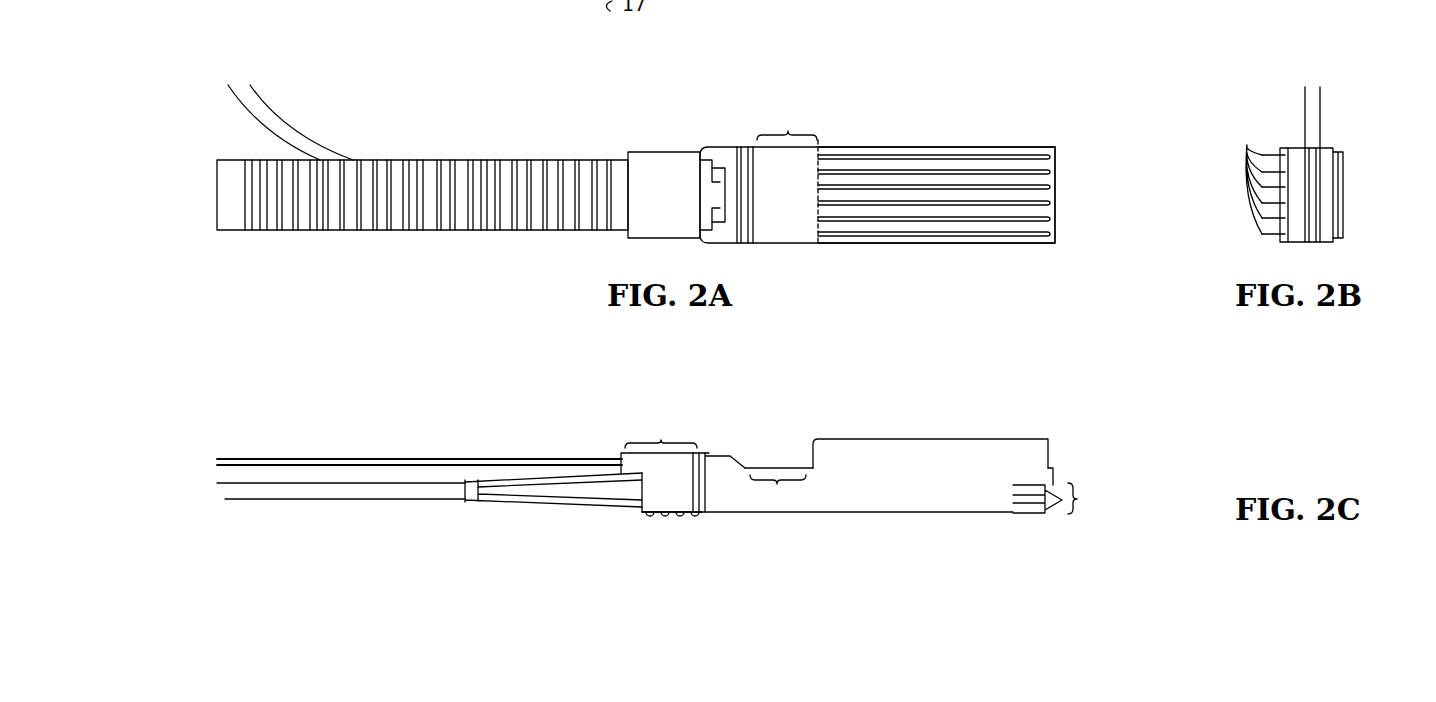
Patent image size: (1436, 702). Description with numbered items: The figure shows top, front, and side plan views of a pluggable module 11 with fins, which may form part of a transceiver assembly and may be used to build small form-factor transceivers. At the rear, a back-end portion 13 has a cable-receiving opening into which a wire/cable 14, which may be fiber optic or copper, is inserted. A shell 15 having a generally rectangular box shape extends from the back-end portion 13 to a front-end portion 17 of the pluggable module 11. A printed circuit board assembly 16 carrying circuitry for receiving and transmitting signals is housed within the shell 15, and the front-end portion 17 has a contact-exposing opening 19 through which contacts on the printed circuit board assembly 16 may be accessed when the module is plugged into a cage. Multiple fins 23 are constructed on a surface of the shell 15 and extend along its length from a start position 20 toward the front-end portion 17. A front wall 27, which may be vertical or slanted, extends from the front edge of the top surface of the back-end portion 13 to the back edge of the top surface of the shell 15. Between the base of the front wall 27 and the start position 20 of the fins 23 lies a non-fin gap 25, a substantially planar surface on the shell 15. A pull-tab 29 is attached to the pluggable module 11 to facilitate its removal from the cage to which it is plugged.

In FIG. 2A, the pluggable module 11 is at (958, 100).
In FIG. 2B, the pluggable module 11 is at (1255, 100).
In FIG. 2C, the pluggable module 11 is at (912, 406).
In FIG. 2A, the back-end portion 13 is at (670, 150).
In FIG. 2C, the back-end portion 13 is at (674, 444).
In FIG. 2A, the wire/cable 14 is at (300, 140).
In FIG. 2B, the wire/cable 14 is at (1322, 100).
In FIG. 2C, the wire/cable 14 is at (540, 470).
In FIG. 2A, the shell 15 is at (876, 147).
In FIG. 2C, the shell 15 is at (847, 490).
In FIG. 2B, the printed circuit board assembly 16 is at (1330, 156).
In FIG. 2C, the printed circuit board assembly 16 is at (1040, 516).
In FIG. 2A, the front-end portion 17 is at (1070, 187).
In FIG. 2C, the front-end portion 17 is at (1123, 497).
In FIG. 2C, the contact-exposing opening 19 is at (1078, 498).
In FIG. 2A, the start position 20 is at (818, 132).
In FIG. 2C, the start position 20 is at (805, 466).
In FIG. 2A, the fins 23 is at (1023, 234).
In FIG. 2B, the fins 23 is at (1260, 176).
In FIG. 2C, the fins 23 is at (988, 439).
In FIG. 2A, the non-fin gap 25 is at (787, 125).
In FIG. 2C, the non-fin gap 25 is at (790, 484).
In FIG. 2A, the front wall 27 is at (745, 147).
In FIG. 2B, the front wall 27 is at (1289, 148).
In FIG. 2C, the front wall 27 is at (748, 458).
In FIG. 2A, the pull-tab 29 is at (478, 160).
In FIG. 2C, the pull-tab 29 is at (478, 459).